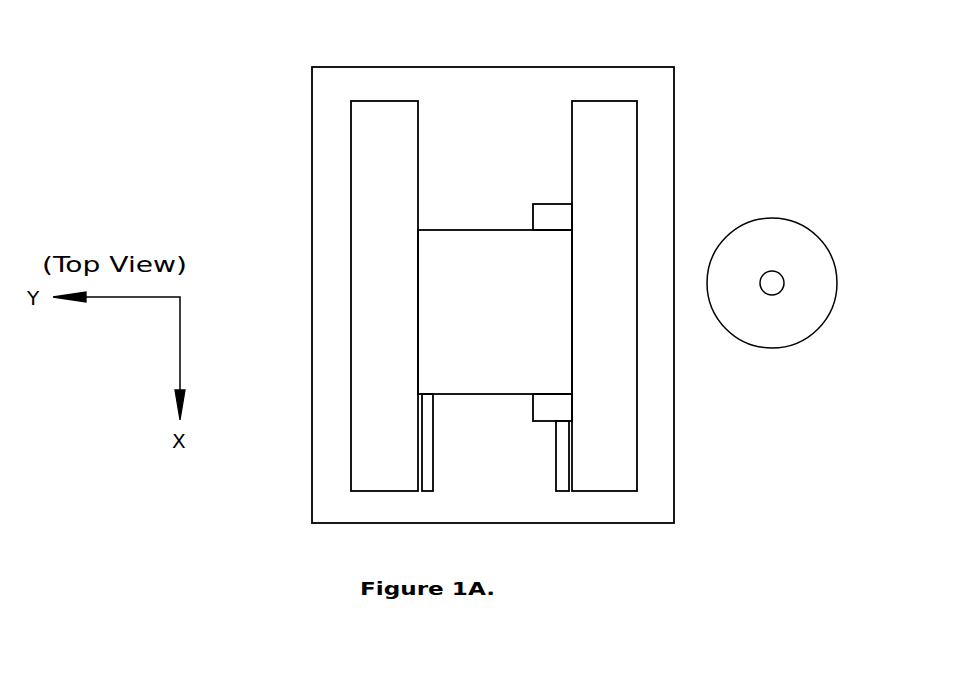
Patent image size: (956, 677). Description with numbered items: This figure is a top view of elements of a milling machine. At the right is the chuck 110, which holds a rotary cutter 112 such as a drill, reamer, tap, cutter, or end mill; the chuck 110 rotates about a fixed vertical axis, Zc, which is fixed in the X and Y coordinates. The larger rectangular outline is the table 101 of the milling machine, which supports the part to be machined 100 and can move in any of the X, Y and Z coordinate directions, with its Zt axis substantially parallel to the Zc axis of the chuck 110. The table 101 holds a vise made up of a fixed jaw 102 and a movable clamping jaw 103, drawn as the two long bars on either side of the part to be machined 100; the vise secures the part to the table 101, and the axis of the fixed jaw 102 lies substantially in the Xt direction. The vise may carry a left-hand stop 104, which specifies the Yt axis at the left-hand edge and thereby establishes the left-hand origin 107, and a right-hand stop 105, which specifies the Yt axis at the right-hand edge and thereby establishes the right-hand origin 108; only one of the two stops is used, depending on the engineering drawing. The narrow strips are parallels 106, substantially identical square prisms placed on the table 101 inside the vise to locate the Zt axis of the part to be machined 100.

The part to be machined 100 is at (473, 327).
The table 101 is at (470, 102).
The fixed jaw 102 is at (612, 181).
The movable clamping jaw 103 is at (388, 181).
The left-hand stop 104 is at (553, 217).
The right-hand stop 105 is at (552, 405).
The parallels 106 is at (562, 463).
The left-hand origin 107 is at (572, 232).
The right-hand origin 108 is at (572, 394).
The chuck 110 is at (754, 317).
The rotary cutter 112 is at (771, 287).